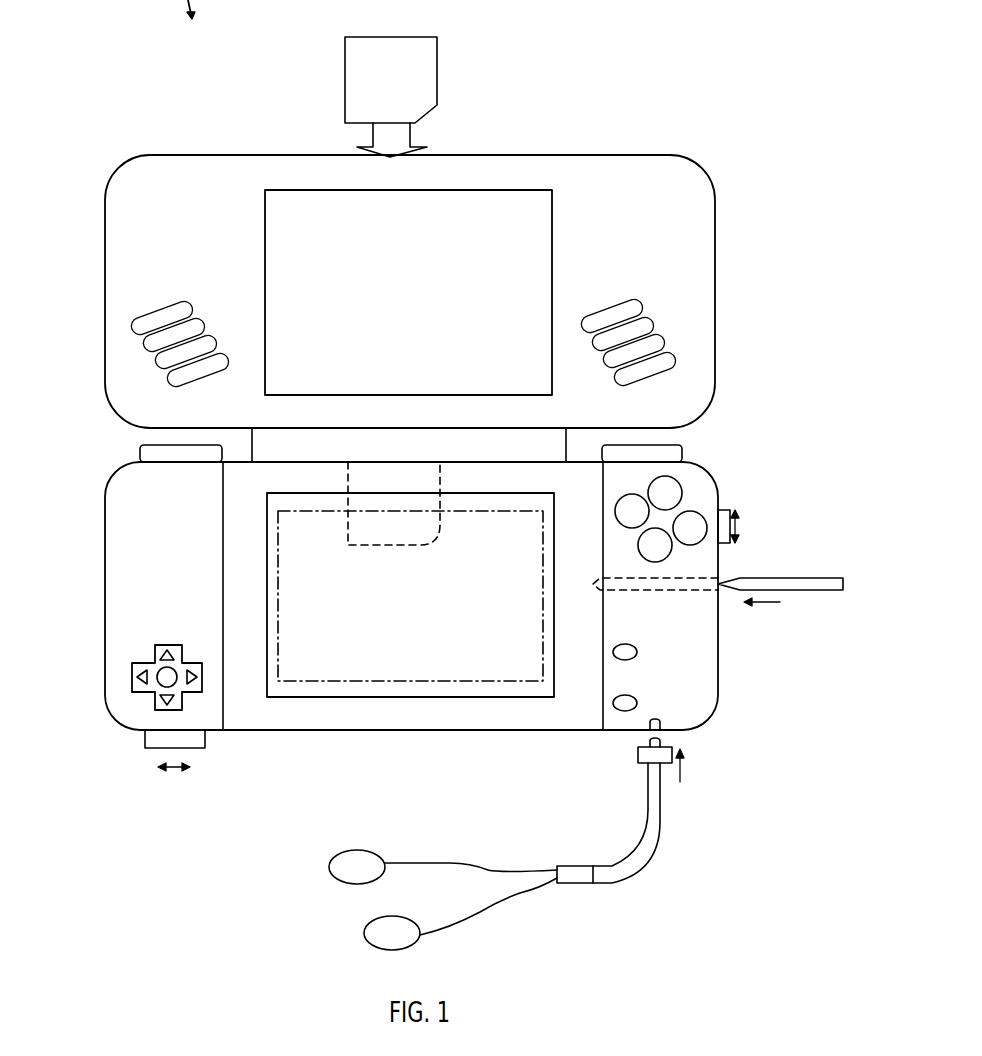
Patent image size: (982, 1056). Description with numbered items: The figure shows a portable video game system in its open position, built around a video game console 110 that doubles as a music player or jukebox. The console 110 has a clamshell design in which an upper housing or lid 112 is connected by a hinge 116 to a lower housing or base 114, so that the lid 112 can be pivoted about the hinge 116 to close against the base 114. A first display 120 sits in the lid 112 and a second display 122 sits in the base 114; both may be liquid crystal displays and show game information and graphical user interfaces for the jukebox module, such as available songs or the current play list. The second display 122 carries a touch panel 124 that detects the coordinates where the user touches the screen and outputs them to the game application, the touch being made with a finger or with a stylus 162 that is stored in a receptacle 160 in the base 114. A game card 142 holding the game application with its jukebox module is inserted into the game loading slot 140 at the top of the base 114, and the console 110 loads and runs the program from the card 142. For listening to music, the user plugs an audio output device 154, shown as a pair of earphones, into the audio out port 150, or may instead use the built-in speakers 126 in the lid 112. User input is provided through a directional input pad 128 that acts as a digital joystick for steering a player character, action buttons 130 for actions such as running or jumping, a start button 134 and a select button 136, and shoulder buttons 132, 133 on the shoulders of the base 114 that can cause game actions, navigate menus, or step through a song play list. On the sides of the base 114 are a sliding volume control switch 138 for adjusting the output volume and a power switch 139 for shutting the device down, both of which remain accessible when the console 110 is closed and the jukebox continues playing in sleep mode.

The video game console 110 is at (110, 428).
The upper housing 112 is at (105, 225).
The lower housing 114 is at (105, 620).
The hinge 116 is at (313, 445).
The first display 120 is at (517, 190).
The second display 122 is at (500, 697).
The touch panel 124 is at (327, 685).
The speakers 126 is at (672, 337).
The directional input pad 128 is at (148, 690).
The action buttons 130 is at (690, 512).
The shoulder button 132 is at (682, 452).
The shoulder button 133 is at (140, 455).
The start button 134 is at (613, 652).
The select button 136 is at (613, 703).
The volume control switch 138 is at (160, 750).
The power switch 139 is at (720, 510).
The game loading slot 140 is at (445, 490).
The game card 142 is at (437, 70).
The audio out port 150 is at (660, 725).
The audio output device 154 is at (575, 892).
The receptacle 160 is at (707, 592).
The stylus 162 is at (787, 580).